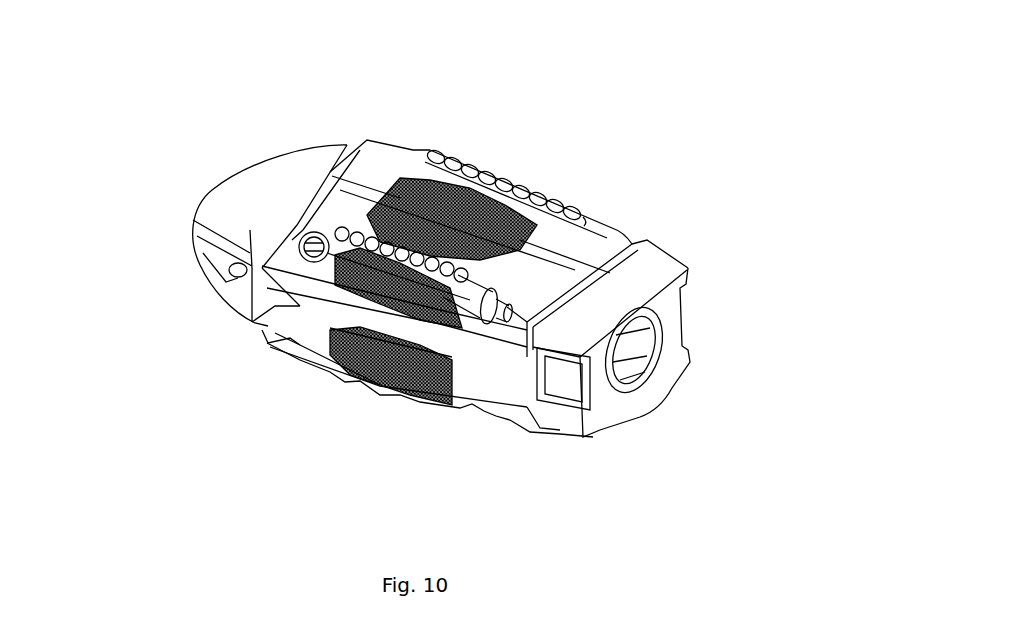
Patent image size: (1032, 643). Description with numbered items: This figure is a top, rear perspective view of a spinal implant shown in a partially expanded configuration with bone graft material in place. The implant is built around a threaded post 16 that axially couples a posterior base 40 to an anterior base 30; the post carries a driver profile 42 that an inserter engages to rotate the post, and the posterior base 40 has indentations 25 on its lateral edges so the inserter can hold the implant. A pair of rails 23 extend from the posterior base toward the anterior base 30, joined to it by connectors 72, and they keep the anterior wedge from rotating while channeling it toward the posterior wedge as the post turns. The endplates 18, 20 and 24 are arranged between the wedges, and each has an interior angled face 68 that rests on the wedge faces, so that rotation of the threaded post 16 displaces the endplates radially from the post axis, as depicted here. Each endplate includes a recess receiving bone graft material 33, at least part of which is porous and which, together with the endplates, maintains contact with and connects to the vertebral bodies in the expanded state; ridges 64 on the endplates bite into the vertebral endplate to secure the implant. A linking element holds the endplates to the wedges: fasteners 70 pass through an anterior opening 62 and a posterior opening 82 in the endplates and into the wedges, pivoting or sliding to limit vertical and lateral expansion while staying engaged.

The threaded post 16 is at (636, 366).
The endplate 18 is at (339, 224).
The endplate 20 is at (393, 158).
The rails 23 is at (415, 339).
The endplate 24 is at (297, 343).
The indentations 25 is at (569, 389).
The anterior base 30 is at (258, 178).
The bone graft material 33 is at (452, 184).
The posterior base 40 is at (633, 278).
The driver profile 42 is at (651, 365).
The opening 62 is at (300, 236).
The ridges 64 is at (502, 170).
The interior angled face 68 is at (539, 429).
The fasteners 70 is at (478, 319).
The connectors 72 is at (231, 271).
The posterior opening 82 is at (586, 216).